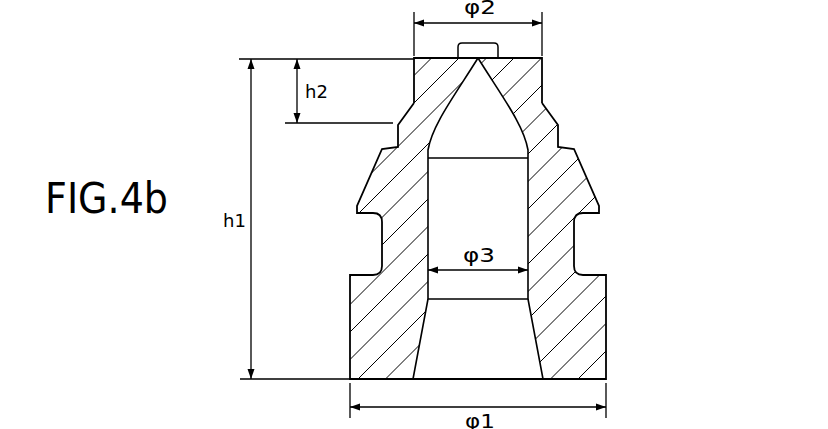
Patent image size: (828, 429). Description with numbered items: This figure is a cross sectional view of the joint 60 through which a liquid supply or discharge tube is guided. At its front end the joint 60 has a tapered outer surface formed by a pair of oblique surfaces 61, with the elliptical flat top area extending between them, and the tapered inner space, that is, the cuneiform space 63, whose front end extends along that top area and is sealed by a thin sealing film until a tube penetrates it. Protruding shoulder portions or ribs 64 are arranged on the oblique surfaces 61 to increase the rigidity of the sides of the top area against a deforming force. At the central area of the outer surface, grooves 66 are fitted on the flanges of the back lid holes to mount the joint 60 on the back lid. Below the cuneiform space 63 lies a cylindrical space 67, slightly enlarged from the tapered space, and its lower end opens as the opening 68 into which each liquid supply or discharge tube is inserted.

The joint 60 is at (606, 343).
The oblique surfaces 61 is at (547, 110).
The cuneiform space 63 is at (482, 132).
The shoulder portions or ribs 64 is at (543, 62).
The grooves 66 is at (588, 247).
The cylindrical space 67 is at (493, 208).
The opening 68 is at (480, 378).